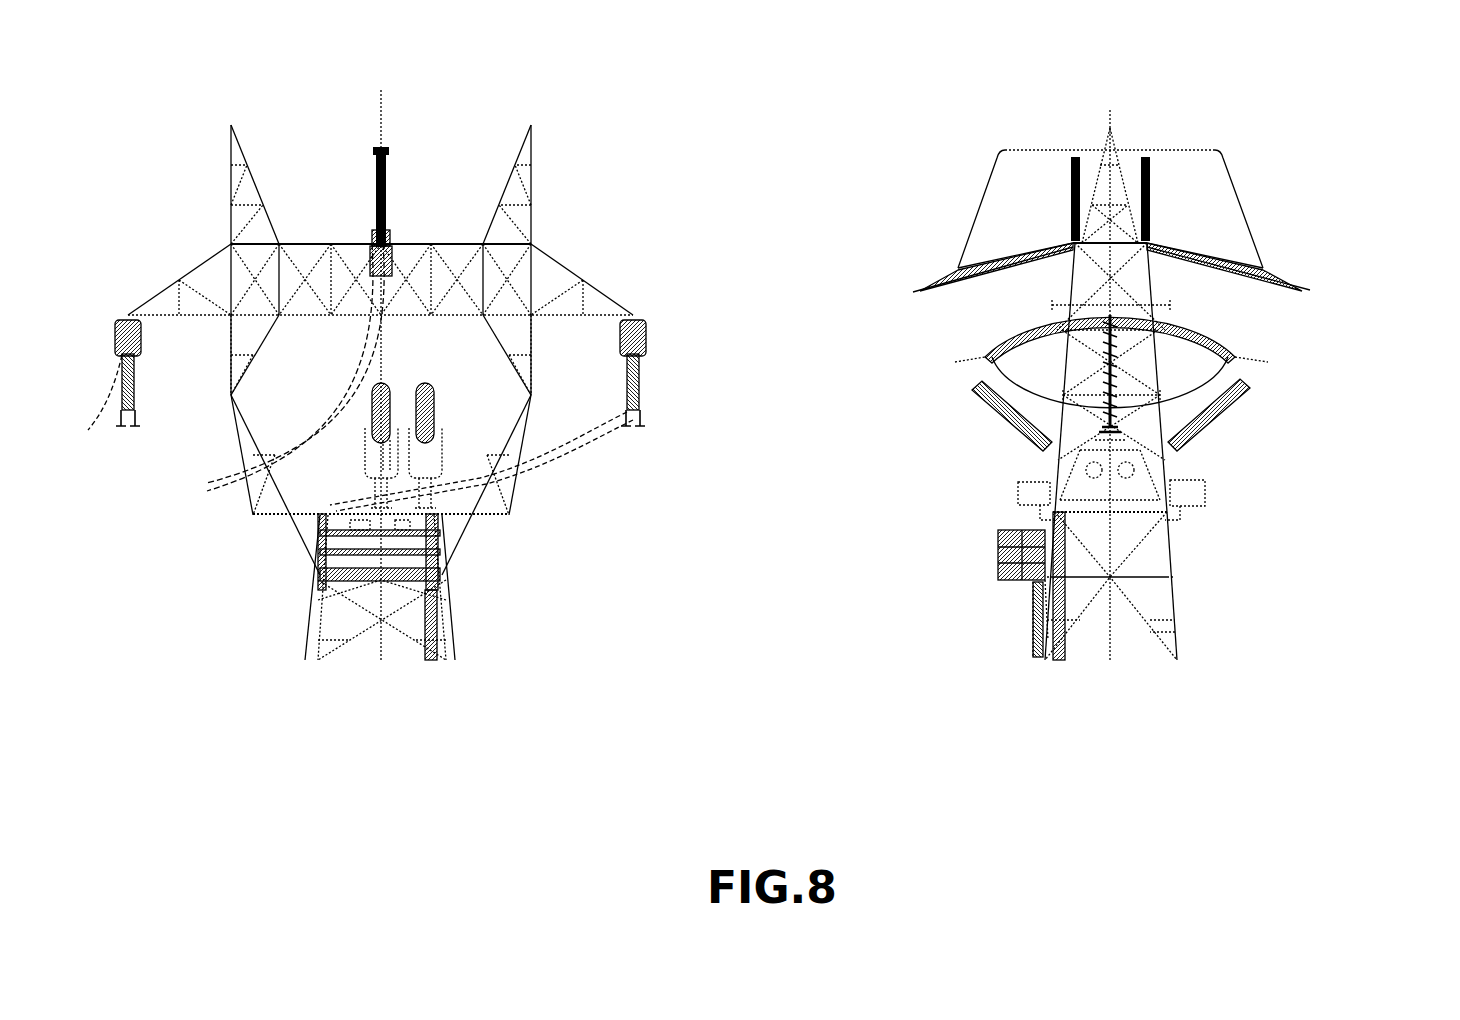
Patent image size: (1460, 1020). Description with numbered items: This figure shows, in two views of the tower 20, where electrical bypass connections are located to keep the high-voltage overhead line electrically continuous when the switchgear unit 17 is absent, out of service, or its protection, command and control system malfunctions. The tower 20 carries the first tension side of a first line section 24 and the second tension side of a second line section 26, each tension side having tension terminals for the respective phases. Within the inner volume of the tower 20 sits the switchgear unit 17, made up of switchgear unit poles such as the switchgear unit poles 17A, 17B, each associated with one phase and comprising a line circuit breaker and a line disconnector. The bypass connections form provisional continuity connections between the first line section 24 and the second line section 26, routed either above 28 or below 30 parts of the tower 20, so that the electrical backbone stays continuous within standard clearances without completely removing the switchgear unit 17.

The switchgear unit 17 is at (335, 462).
The switchgear unit pole 17A is at (433, 417).
The switchgear unit pole 17B is at (387, 438).
The tower 20 is at (1132, 578).
The first line section 24 is at (918, 288).
The second line section 26 is at (1297, 288).
The continuity connection passing above parts of the tower 28 is at (381, 142).
The continuity connection passing below parts of the tower 30 is at (137, 408).